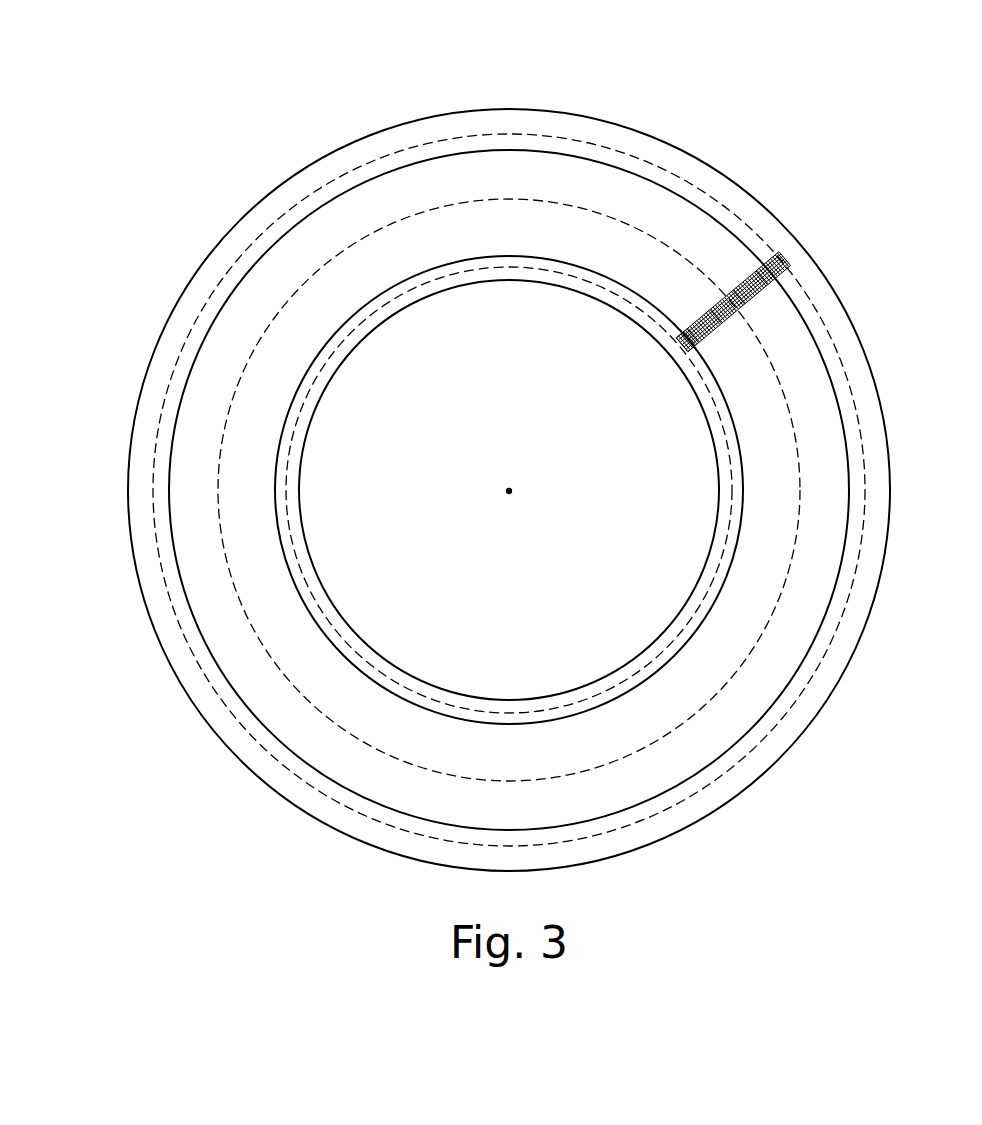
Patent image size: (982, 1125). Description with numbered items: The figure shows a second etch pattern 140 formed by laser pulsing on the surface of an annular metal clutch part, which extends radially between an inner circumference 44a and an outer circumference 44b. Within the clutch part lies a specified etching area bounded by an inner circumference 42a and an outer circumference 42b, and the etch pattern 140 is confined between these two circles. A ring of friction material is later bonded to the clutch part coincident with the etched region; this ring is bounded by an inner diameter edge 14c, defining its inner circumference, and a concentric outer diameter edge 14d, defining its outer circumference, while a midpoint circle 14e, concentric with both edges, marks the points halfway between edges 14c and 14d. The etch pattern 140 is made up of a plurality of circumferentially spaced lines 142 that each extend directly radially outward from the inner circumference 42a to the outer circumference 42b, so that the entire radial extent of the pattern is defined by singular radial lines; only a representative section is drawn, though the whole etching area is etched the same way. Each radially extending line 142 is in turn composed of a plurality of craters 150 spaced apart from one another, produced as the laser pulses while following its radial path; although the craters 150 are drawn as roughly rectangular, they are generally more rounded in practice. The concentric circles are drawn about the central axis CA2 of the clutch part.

The inner diameter edge 14c is at (277, 475).
The outer diameter edge 14d is at (225, 300).
The midpoint circle 14e is at (235, 397).
The inner circumference of specified etching area 42a is at (348, 335).
The outer circumference of specified etching area 42b is at (282, 212).
The inner circumference of metal clutch part 44a is at (495, 282).
The outer circumference of metal clutch part 44b is at (415, 118).
The etch pattern 140 is at (733, 281).
The radially extending lines 142 is at (678, 356).
The craters 150 is at (697, 317).
The central axis CA2 is at (509, 494).